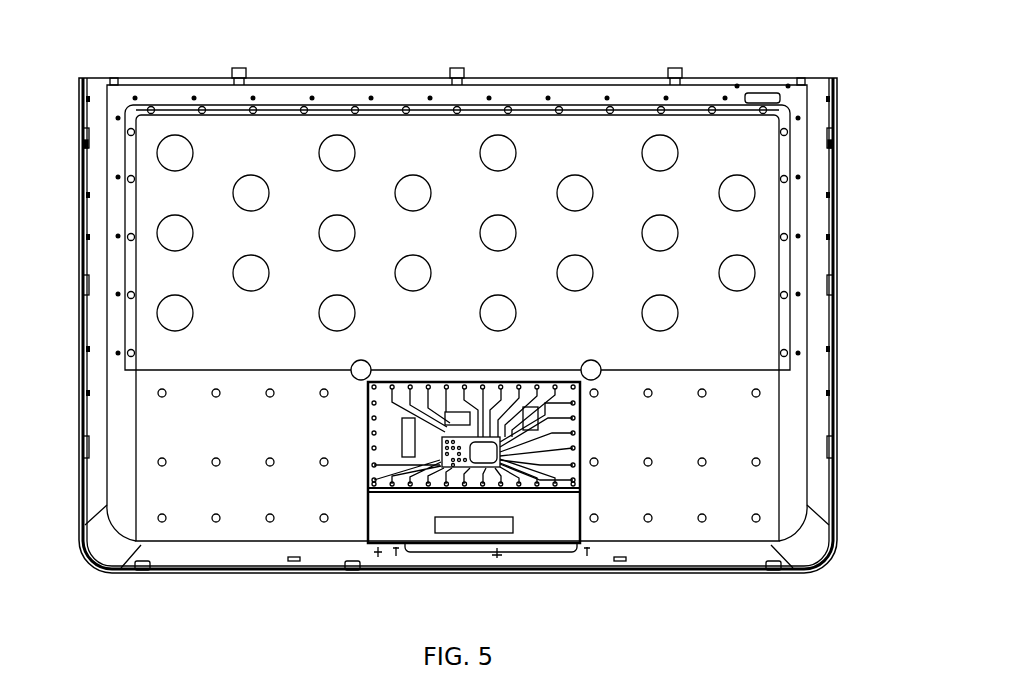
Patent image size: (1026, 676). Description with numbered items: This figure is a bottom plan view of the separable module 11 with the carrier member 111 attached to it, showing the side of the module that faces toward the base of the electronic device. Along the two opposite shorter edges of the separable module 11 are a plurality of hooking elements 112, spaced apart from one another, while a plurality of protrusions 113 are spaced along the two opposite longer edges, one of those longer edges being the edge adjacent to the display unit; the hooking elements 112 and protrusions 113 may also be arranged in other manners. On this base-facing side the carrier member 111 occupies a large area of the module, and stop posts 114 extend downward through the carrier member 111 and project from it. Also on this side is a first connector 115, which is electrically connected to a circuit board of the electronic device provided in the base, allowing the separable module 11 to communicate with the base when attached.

The separable module 11 is at (848, 62).
The carrier member 111 is at (762, 323).
The hooking elements 112 is at (82, 137).
The protrusions 113 is at (675, 68).
The stop posts 114 is at (365, 360).
The first connector 115 is at (463, 527).